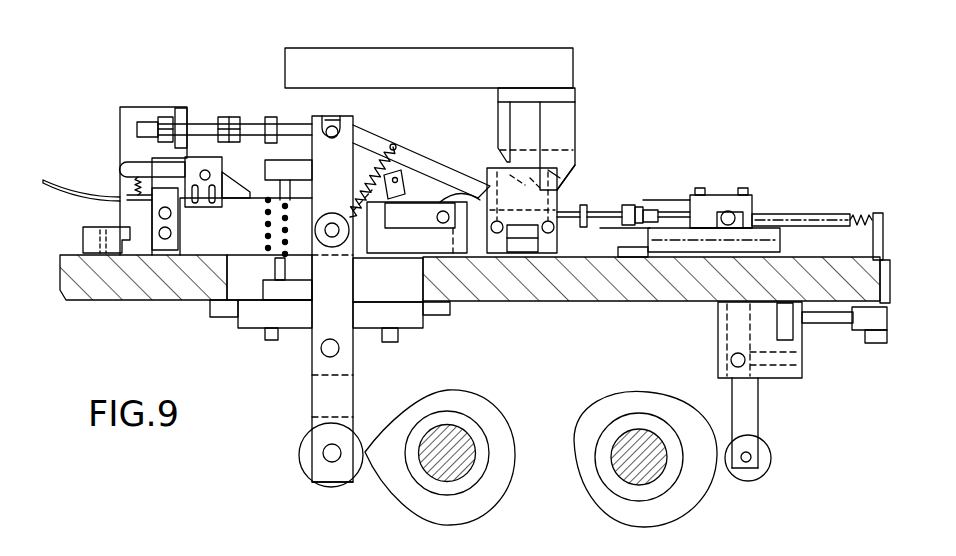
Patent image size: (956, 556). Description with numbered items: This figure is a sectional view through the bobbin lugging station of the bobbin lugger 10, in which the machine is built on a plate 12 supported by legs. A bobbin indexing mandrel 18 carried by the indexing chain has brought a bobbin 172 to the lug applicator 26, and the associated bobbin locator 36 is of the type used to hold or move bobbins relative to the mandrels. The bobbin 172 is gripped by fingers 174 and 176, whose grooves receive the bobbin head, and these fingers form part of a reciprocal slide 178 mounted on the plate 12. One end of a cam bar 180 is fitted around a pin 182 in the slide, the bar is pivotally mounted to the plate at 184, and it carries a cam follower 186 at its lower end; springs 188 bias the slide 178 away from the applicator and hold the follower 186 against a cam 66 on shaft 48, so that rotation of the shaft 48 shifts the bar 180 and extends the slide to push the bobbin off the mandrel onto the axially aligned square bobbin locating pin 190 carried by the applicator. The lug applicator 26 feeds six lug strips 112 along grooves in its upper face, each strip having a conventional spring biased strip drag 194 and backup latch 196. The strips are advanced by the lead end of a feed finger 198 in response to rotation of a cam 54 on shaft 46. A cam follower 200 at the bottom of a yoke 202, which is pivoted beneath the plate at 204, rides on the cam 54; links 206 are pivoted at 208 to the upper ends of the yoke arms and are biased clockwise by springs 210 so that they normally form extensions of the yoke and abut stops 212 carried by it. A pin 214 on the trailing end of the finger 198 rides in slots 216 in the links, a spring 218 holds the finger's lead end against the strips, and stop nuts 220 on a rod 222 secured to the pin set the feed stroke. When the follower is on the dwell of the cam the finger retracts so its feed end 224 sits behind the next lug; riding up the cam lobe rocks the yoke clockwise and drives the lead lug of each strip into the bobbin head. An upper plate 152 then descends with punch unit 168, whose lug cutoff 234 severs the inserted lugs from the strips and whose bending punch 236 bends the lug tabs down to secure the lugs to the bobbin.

The bobbin lugger 10 is at (755, 81).
The plate 12 is at (521, 299).
The bobbin indexing mandrel 18 is at (636, 203).
The lug applicator 26 is at (292, 36).
The bobbin locator 36 is at (778, 92).
The shaft 46 is at (462, 440).
The shaft 48 is at (620, 470).
The cam 54 is at (465, 515).
The cam 66 is at (683, 510).
The lug strip 112 is at (432, 200).
The upper plate 152 is at (357, 48).
The punch unit 168 is at (531, 84).
The bobbin 172 is at (590, 200).
The finger 174 is at (685, 193).
The finger 176 is at (640, 252).
The reciprocal slide 178 is at (720, 200).
The cam bar 180 is at (760, 398).
The pin 182 is at (745, 207).
The pivot 184 is at (733, 352).
The cam follower 186 is at (771, 460).
The spring 188 is at (840, 203).
The square bobbin locating pin 190 is at (622, 200).
The strip drag 194 is at (130, 165).
The backup latch 196 is at (396, 178).
The feed finger 198 is at (383, 142).
The cam follower 200 is at (300, 452).
The yoke 202 is at (360, 386).
The pivot 204 is at (322, 347).
The link 206 is at (350, 118).
The pivot 208 is at (338, 232).
The spring 210 is at (265, 223).
The stop 212 is at (375, 233).
The pin 214 is at (330, 118).
The slot 216 is at (330, 126).
The spring 218 is at (398, 162).
The stop nut 220 is at (230, 116).
The rod 222 is at (248, 175).
The lead or feed end 224 is at (520, 172).
The lug cutoff 234 is at (548, 170).
The bending punch 236 is at (570, 172).